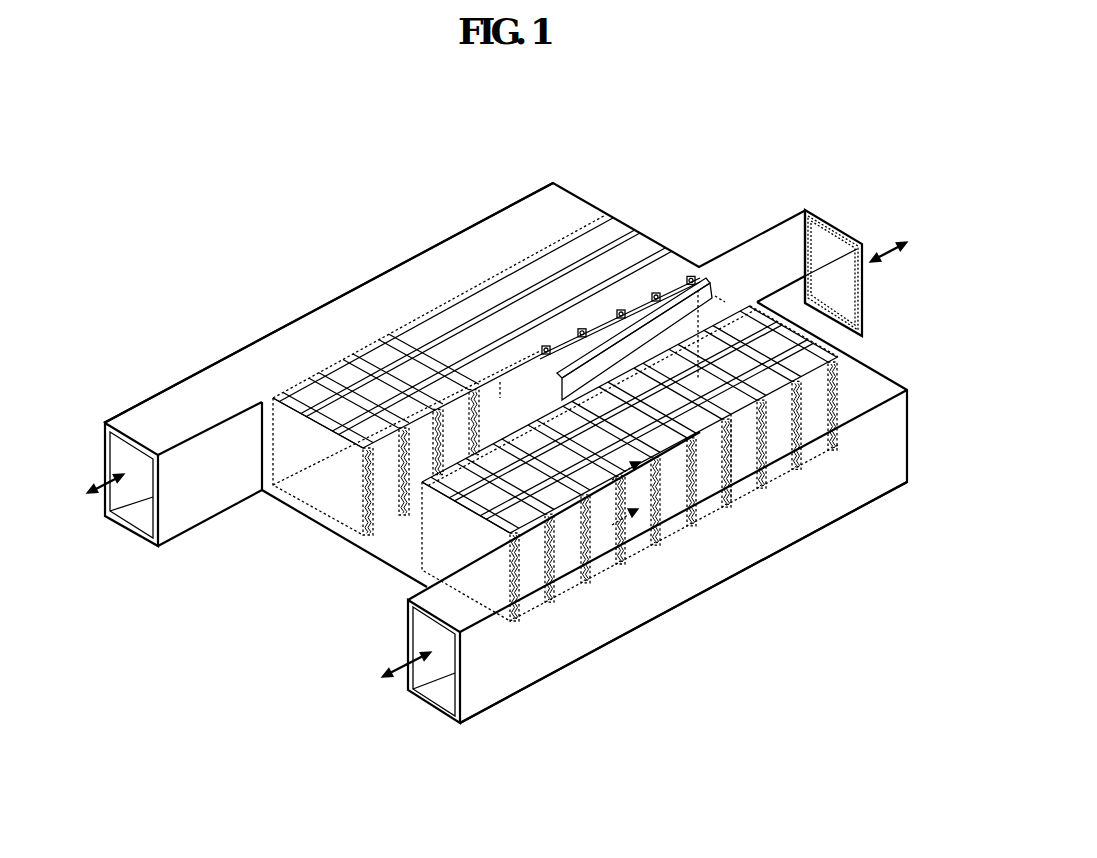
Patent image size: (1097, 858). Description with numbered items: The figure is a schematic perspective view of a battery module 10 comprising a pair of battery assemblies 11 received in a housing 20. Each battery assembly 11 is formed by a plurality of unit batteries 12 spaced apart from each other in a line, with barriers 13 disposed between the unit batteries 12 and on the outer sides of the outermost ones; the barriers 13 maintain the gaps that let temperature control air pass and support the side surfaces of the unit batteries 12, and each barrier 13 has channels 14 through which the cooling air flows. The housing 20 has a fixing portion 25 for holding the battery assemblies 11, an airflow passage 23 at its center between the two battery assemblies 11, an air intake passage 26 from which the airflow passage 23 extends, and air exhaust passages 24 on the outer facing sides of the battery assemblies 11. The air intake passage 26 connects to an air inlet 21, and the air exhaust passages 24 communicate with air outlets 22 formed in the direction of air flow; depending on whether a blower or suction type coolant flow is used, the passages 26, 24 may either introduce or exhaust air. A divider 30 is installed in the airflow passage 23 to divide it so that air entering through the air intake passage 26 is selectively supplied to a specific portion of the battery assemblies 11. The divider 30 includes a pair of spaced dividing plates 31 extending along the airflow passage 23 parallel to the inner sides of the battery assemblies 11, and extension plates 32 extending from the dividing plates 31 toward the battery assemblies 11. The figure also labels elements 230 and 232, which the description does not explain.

The battery module 10 is at (736, 167).
The battery assembly 11 is at (555, 410).
The unit battery 12 is at (717, 525).
The barrier 13 is at (700, 507).
The channel 14 is at (663, 475).
The housing 20 is at (570, 188).
The air inlet 21 is at (864, 298).
The air outlet 22 is at (141, 528).
The airflow passage 23 is at (397, 537).
The air exhaust passage 24 is at (348, 299).
The fixing portion 25 is at (324, 507).
The air intake passage 26 is at (785, 262).
The divider 30 is at (600, 325).
The dividing plate 31 is at (644, 300).
The extension plate 32 is at (503, 392).
The partition plate 230 is at (673, 290).
The cut-out portion 232 is at (720, 300).